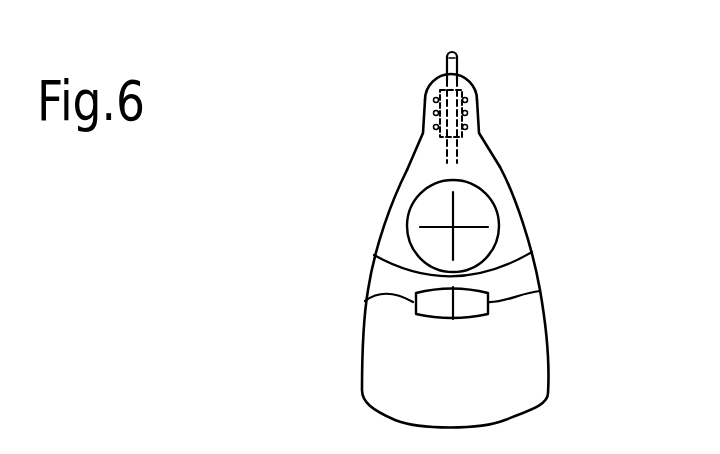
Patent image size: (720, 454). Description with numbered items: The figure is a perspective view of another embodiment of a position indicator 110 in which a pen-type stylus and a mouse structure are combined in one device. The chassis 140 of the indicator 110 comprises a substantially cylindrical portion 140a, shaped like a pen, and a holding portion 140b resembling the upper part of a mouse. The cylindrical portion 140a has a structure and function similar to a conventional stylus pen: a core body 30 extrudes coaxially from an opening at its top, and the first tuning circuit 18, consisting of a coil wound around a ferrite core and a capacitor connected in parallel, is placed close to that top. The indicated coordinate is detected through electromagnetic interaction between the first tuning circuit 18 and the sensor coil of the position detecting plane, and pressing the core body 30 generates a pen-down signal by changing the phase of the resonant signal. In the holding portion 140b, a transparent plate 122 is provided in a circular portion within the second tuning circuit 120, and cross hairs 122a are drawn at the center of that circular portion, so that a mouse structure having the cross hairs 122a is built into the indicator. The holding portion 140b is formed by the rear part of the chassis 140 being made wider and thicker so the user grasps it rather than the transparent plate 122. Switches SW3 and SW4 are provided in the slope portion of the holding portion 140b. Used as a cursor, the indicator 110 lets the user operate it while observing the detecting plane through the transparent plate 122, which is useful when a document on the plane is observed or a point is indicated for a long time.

The position indicator 110 is at (291, 131).
The chassis 140 is at (550, 345).
The substantially cylindrical portion 140a is at (426, 99).
The holding portion 140b is at (363, 365).
The core body 30 is at (457, 68).
The first tuning circuit 18 is at (479, 115).
The second tuning circuit 120 is at (498, 217).
The transparent plate 122 is at (463, 208).
The cross hairs 122a is at (460, 228).
The switch SW3 is at (365, 301).
The switch SW4 is at (540, 291).